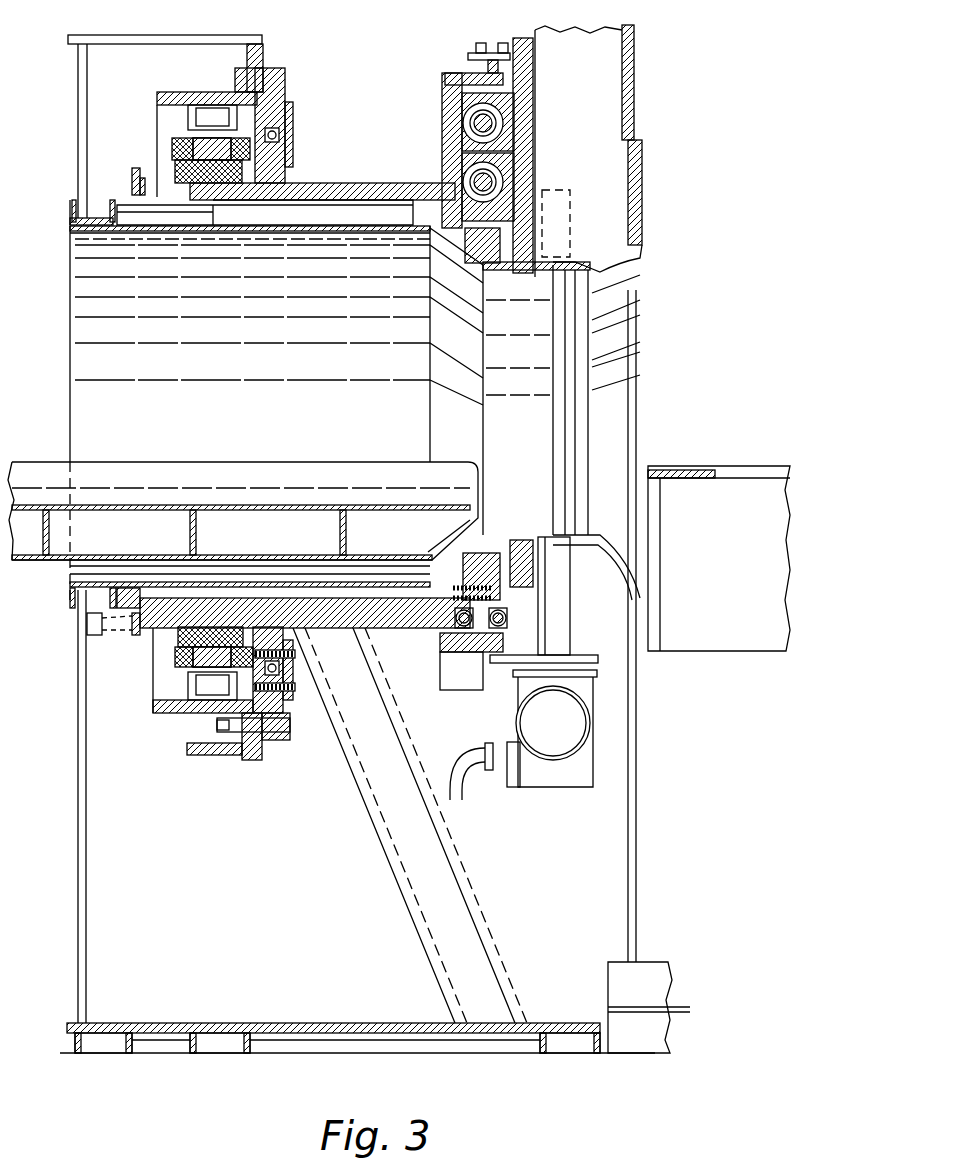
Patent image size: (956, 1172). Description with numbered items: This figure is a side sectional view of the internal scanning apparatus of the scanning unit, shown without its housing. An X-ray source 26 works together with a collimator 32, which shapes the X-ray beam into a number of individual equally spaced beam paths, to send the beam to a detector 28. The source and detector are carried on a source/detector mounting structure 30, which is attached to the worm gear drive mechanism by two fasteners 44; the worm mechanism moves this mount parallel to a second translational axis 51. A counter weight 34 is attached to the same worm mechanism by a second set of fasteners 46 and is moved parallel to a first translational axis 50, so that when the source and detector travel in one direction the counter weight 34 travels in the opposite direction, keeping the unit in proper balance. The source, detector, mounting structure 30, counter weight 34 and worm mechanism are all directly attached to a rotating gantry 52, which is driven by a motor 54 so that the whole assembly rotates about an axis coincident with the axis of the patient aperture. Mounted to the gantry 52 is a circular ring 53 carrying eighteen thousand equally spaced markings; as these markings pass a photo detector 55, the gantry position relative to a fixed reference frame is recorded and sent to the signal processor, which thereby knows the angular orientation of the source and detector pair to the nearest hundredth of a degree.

The X-ray source 26 is at (516, 725).
The detector 28 is at (578, 202).
The source/detector mounting structure 30 is at (540, 150).
The collimator 32 is at (575, 616).
The counter weight 34 is at (473, 270).
The fasteners 44 is at (540, 114).
The second set of fasteners 46 is at (503, 288).
The first translational axis 50 is at (478, 182).
The second translational axis 51 is at (478, 121).
The rotating gantry 52 is at (328, 184).
The circular ring 53 is at (132, 182).
The motor 54 is at (160, 118).
The photo detector 55 is at (100, 637).